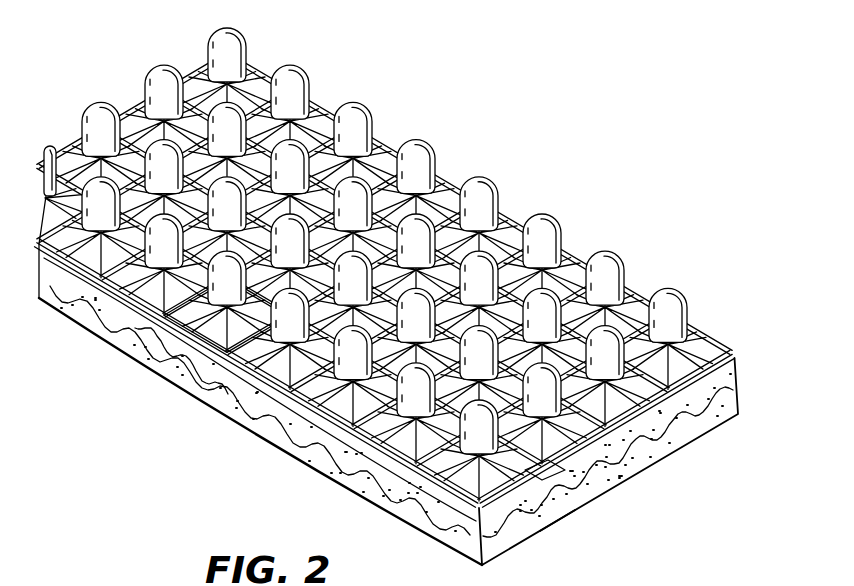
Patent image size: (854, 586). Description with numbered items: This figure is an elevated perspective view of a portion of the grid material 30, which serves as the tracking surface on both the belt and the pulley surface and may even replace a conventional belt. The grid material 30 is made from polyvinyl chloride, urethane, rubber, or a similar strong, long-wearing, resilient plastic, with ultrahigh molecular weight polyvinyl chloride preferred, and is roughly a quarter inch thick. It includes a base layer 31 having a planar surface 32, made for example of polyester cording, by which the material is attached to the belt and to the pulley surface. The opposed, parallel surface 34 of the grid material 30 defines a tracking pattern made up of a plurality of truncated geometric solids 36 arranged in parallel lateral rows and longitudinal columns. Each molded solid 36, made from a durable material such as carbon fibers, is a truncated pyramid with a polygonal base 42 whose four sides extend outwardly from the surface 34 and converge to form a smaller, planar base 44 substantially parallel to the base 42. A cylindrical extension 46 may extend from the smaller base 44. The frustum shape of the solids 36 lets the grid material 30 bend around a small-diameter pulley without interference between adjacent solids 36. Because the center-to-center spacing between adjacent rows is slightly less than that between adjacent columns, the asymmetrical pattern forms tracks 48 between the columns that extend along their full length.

The grid material 30 is at (426, 302).
The base layer 31 is at (738, 392).
The planar surface 32 is at (632, 481).
The opposed parallel surface 34 is at (735, 353).
The truncated geometric solids 36 is at (378, 264).
The polygonal base 42 is at (213, 328).
The smaller planar base 44 is at (128, 362).
The cylindrical extension 46 is at (480, 186).
The tracks 48 is at (556, 523).